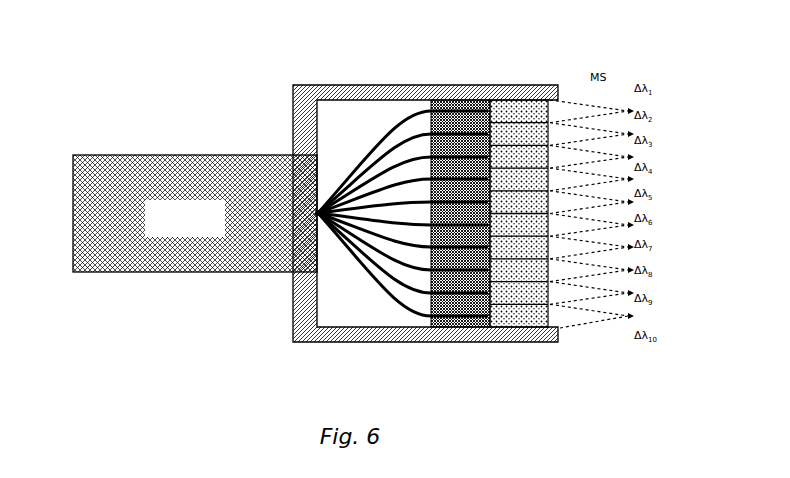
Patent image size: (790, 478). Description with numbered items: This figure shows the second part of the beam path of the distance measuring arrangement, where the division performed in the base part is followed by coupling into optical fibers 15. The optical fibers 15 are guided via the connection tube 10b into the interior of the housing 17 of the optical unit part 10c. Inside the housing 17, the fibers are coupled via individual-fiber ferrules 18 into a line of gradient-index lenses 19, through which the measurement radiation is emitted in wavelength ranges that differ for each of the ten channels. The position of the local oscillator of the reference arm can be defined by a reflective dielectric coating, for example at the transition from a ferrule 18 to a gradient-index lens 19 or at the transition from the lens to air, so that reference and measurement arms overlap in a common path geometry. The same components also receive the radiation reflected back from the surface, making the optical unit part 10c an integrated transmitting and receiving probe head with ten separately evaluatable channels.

The connection tube 10b is at (195, 213).
The optical unit part 10c is at (266, 335).
The optical fibers 15 is at (316, 211).
The housing 17 is at (358, 90).
The individual-fiber ferrules 18 is at (470, 315).
The gradient-index lenses 19 is at (500, 113).